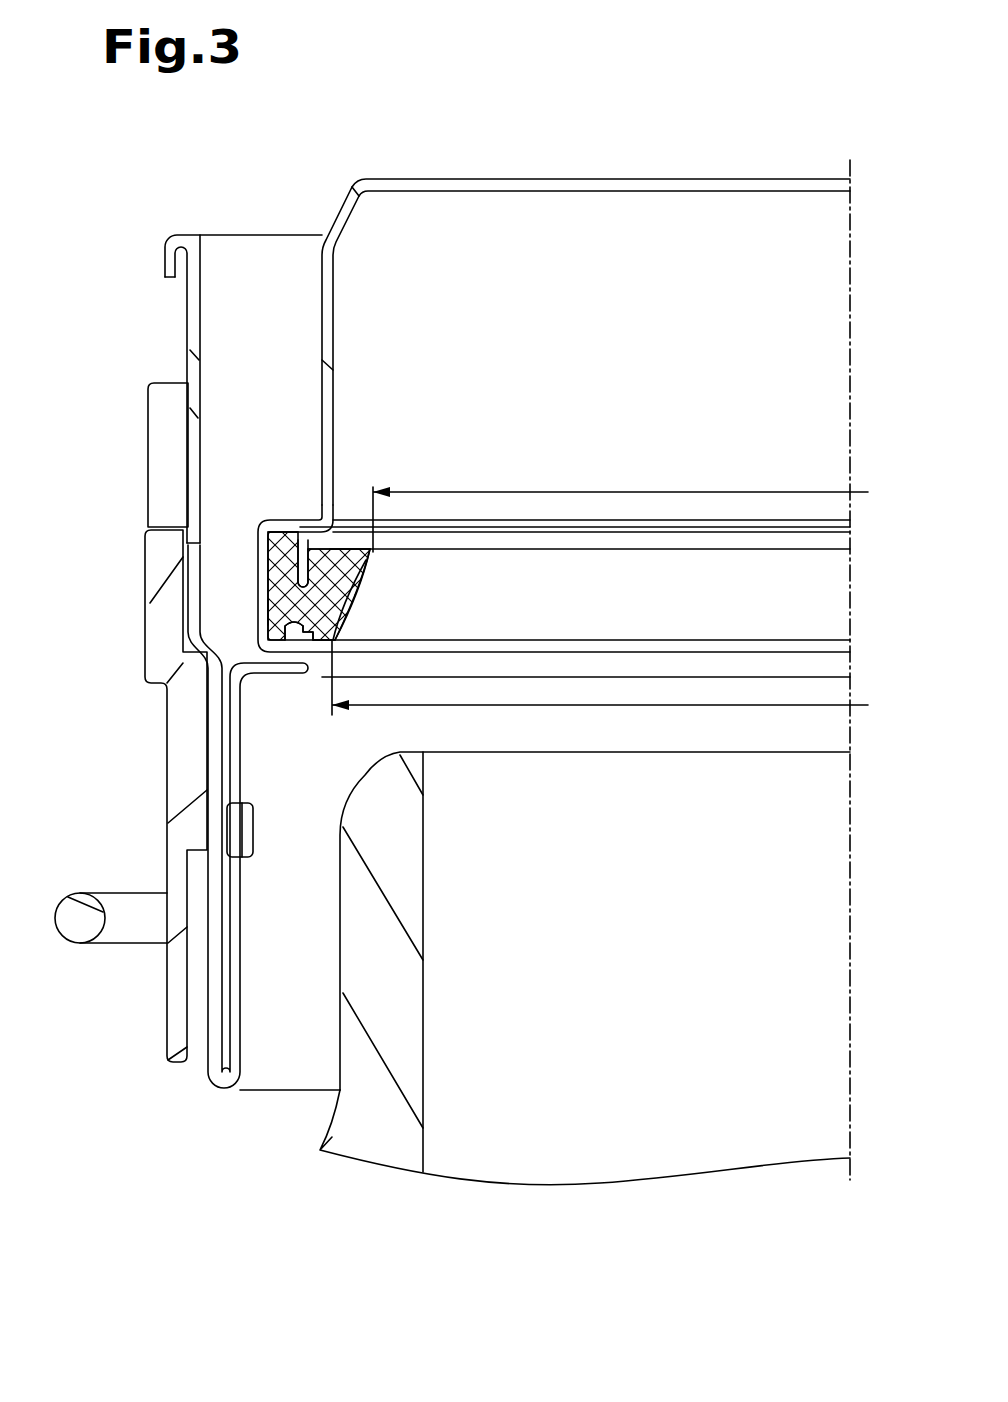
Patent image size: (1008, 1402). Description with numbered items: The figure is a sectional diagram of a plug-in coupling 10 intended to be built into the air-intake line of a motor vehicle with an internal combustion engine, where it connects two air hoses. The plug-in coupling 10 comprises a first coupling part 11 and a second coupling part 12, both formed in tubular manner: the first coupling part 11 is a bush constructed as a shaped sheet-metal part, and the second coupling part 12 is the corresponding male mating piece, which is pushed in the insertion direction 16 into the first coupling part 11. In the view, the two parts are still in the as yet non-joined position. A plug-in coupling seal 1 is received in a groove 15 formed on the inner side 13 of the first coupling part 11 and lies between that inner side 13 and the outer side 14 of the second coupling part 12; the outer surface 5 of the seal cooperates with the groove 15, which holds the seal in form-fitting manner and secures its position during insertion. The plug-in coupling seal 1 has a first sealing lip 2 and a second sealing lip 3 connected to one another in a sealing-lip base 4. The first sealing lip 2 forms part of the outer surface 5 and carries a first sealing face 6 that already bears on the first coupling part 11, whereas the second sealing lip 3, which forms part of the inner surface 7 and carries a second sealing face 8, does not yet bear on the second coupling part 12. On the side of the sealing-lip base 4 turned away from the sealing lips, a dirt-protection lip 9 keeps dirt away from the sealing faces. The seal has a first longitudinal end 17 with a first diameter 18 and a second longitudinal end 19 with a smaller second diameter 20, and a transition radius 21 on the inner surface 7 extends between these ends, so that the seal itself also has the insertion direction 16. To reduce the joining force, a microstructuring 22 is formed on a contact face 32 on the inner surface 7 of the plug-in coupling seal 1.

The plug-in coupling seal 1 is at (266, 588).
The first sealing lip 2 is at (268, 552).
The second sealing lip 3 is at (358, 590).
The sealing-lip base 4 is at (345, 612).
The outer surface 5 is at (258, 612).
The first sealing face 6 is at (270, 546).
The inner surface 7 is at (390, 568).
The second sealing face 8 is at (383, 564).
The dirt-protection lip 9 is at (262, 640).
The plug-in coupling 10 is at (127, 253).
The first coupling part 11 is at (132, 772).
The second coupling part 12 is at (373, 1130).
The inner side 13 is at (370, 405).
The outer side 14 is at (325, 1048).
The groove 15 is at (350, 507).
The insertion direction 16 is at (788, 952).
The first longitudinal end 17 is at (795, 656).
The first diameter 18 is at (607, 708).
The second longitudinal end 19 is at (812, 517).
The second diameter 20 is at (600, 490).
The transition radius 21 is at (349, 636).
The microstructuring 22 is at (334, 626).
The contact face 32 is at (342, 603).